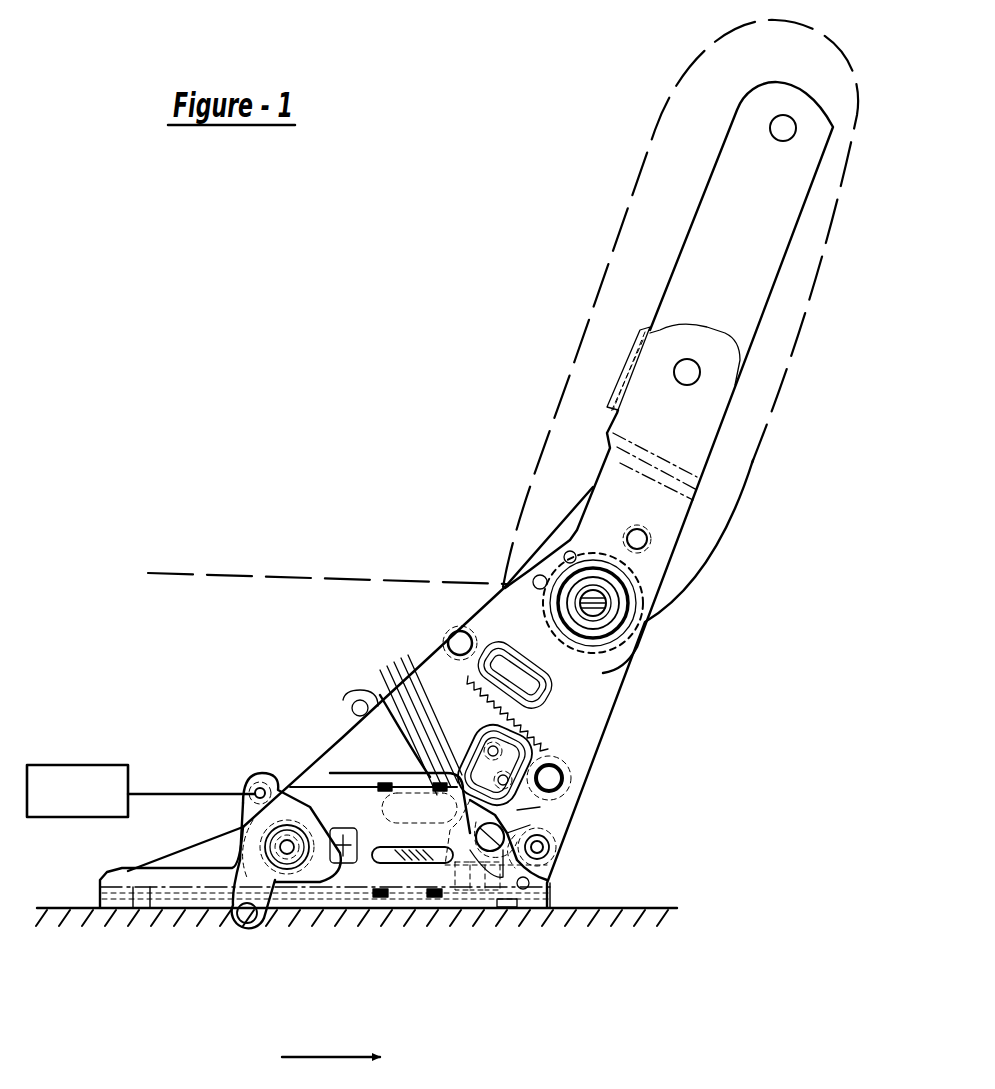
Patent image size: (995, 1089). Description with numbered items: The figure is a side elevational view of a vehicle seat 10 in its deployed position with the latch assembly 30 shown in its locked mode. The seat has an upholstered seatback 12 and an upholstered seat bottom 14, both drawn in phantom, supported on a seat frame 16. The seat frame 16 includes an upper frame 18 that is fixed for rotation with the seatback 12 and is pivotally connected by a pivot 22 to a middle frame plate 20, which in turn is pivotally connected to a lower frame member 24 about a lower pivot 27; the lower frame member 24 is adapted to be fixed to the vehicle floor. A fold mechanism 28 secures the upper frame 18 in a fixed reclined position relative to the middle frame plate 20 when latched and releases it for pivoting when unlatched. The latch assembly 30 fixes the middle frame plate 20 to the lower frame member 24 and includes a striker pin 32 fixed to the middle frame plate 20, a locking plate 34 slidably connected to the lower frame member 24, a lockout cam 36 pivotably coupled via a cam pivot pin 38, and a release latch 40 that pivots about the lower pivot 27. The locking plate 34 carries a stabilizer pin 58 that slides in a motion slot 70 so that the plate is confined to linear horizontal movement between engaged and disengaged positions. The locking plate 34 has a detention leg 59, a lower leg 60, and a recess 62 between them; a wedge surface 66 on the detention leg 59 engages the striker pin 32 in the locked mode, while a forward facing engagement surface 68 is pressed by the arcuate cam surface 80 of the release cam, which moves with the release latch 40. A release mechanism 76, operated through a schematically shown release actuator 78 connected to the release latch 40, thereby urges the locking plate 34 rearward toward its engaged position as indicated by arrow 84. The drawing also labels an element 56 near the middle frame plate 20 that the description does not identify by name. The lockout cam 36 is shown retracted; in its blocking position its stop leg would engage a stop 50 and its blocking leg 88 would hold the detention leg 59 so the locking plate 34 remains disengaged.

The vehicle seat 10 is at (345, 422).
The seatback 12 is at (647, 155).
The seat bottom 14 is at (172, 572).
The seat frame 16 is at (553, 493).
The upper frame 18 is at (703, 243).
The middle frame plate 20 is at (407, 673).
The pivot 22 is at (638, 644).
The lower frame member 24 is at (167, 877).
The lower pivot 27 is at (288, 855).
The fold mechanism 28 is at (455, 685).
The latch assembly 30 is at (290, 773).
The striker pin 32 is at (513, 920).
The locking plate 34 is at (392, 866).
The lockout cam 36 is at (550, 877).
The cam pivot pin 38 is at (541, 847).
The release latch 40 is at (260, 922).
The stop 50 is at (553, 818).
The spring 56 is at (377, 693).
The stabilizer pin 58 is at (443, 866).
The detention leg 59 is at (540, 785).
The lower leg 60 is at (476, 866).
The recess 62 is at (462, 866).
The wedge surface 66 is at (498, 838).
The engagement surface 68 is at (368, 865).
The motion slot 70 is at (403, 866).
The release mechanism 76 is at (233, 783).
The release actuator 78 is at (112, 763).
The arcuate cam surface 80 is at (337, 858).
The arrow 84 is at (331, 1040).
The blocking leg 88 is at (485, 866).